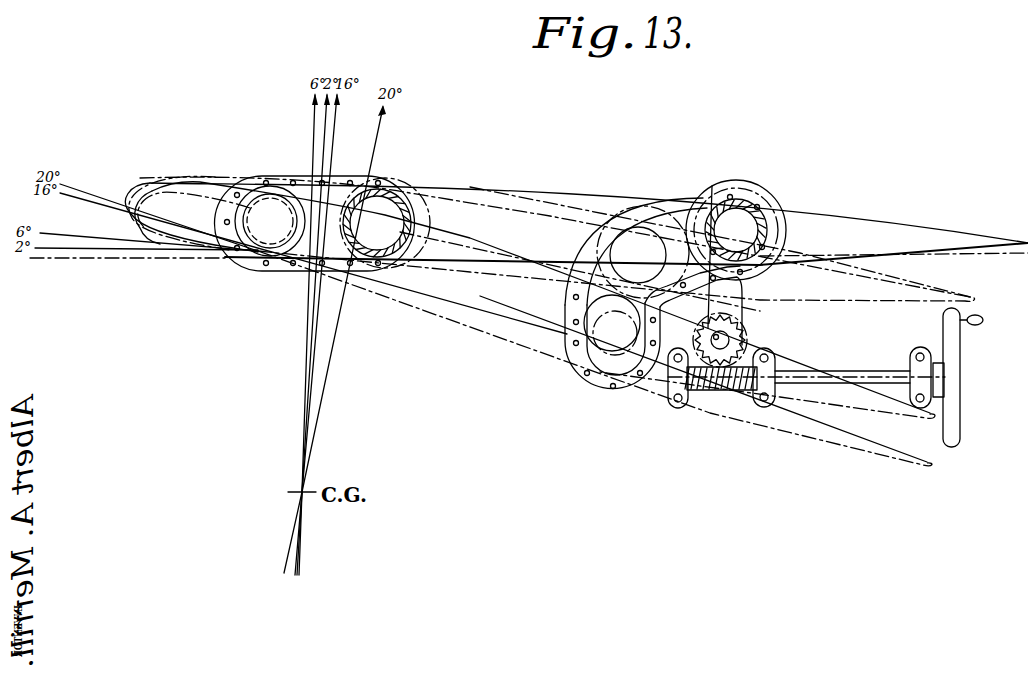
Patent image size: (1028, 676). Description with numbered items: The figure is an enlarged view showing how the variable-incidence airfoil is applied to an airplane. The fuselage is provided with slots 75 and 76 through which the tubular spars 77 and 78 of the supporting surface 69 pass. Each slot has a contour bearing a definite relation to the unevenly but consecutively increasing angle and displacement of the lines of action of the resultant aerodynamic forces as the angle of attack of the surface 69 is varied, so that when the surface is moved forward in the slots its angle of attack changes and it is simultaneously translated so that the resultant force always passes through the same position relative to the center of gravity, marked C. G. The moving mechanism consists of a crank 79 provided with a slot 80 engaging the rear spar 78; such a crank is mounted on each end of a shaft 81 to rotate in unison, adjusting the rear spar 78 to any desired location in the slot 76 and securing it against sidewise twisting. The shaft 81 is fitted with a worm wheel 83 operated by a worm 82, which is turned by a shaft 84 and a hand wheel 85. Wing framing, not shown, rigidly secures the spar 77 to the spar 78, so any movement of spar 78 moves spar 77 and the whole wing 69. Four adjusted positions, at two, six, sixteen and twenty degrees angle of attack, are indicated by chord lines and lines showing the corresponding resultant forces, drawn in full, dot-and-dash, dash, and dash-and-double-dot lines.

The supporting surface 69 is at (934, 211).
The slot 75 is at (258, 176).
The slot 76 is at (620, 390).
The tubular spar 77 is at (398, 194).
The tubular spar 78 is at (760, 222).
The crank 79 is at (742, 312).
The slot 80 is at (740, 192).
The shaft 81 is at (735, 340).
The worm 82 is at (705, 392).
The worm wheel 83 is at (755, 352).
The shaft 84 is at (848, 374).
The hand wheel 85 is at (956, 414).